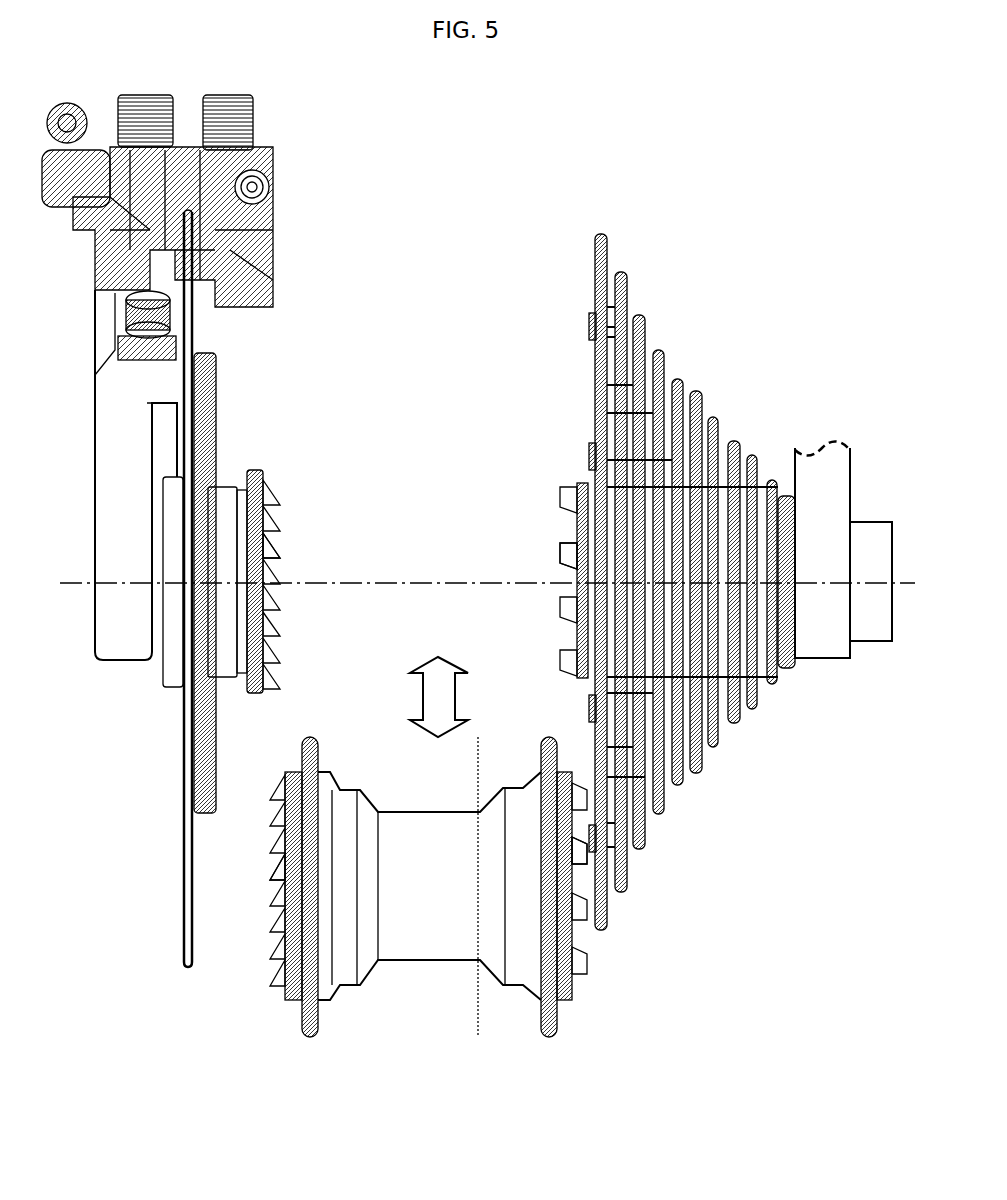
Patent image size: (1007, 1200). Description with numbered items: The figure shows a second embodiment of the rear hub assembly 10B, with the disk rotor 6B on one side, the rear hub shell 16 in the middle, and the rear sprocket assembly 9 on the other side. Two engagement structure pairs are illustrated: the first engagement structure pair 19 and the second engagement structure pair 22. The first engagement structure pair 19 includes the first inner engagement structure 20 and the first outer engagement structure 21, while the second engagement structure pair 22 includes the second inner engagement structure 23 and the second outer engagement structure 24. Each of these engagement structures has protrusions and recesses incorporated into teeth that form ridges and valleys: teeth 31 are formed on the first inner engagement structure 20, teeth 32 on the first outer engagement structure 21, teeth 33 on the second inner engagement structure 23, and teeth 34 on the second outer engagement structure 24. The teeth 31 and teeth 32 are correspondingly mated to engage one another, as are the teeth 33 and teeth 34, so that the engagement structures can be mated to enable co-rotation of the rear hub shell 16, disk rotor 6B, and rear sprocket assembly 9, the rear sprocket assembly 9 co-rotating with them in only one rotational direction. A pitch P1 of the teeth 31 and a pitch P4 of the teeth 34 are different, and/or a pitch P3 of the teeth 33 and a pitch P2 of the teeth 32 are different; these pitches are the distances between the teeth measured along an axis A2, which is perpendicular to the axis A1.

The disk rotor 6B is at (182, 859).
The rear sprocket assembly 9 is at (784, 490).
The rear hub assembly 10B is at (489, 1150).
The rear hub shell 16 is at (565, 1047).
The first engagement structure pair 19 is at (258, 868).
The first inner engagement structure 20 is at (247, 775).
The first outer engagement structure 21 is at (307, 468).
The second engagement structure pair 22 is at (588, 822).
The second inner engagement structure 23 is at (608, 937).
The second outer engagement structure 24 is at (543, 680).
The teeth 31 is at (283, 955).
The teeth 32 is at (280, 532).
The teeth 33 is at (588, 950).
The teeth 34 is at (561, 550).
The pitch P1 is at (268, 947).
The pitch P2 is at (298, 585).
The pitch P3 is at (654, 960).
The pitch P4 is at (525, 541).
The axis A1 is at (252, 887).
The axis A2 is at (383, 740).